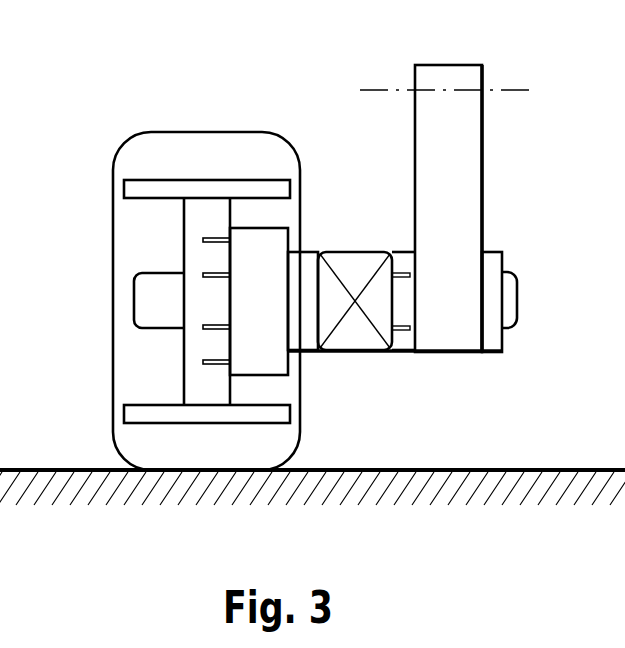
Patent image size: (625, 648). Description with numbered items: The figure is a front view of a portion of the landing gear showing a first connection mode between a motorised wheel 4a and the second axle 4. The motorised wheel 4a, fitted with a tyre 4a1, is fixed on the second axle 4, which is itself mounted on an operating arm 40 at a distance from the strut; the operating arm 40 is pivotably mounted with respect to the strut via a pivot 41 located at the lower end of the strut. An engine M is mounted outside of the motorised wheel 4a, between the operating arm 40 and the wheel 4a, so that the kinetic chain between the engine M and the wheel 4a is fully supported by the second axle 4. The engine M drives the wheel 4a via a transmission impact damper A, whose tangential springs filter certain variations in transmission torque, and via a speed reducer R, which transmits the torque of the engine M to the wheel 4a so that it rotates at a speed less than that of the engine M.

The second axle 4 is at (508, 298).
The motorised wheel 4a is at (130, 412).
The tyre 4a1 is at (144, 163).
The speed reducer R is at (259, 218).
The engine M is at (361, 230).
The transmission impact damper A is at (314, 362).
The operating arm 40 is at (482, 190).
The pivot 41 is at (516, 89).